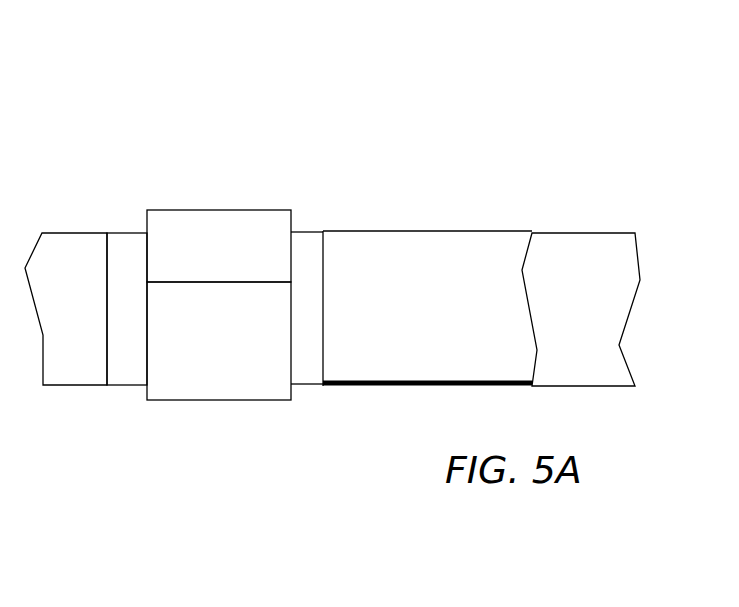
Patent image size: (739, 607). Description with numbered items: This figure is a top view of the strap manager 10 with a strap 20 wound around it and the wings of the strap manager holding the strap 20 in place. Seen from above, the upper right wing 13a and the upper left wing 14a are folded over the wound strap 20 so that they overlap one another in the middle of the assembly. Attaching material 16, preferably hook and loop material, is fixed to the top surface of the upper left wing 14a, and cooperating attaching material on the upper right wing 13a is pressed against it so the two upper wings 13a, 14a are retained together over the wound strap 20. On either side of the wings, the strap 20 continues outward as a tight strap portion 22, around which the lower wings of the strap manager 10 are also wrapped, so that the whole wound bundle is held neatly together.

The strap manager 10 is at (327, 86).
The attaching material 16 is at (239, 136).
The tight strap portion 22 is at (81, 314).
The strap 20 is at (141, 270).
The upper right wing 13a is at (243, 268).
The upper left wing 14a is at (219, 366).